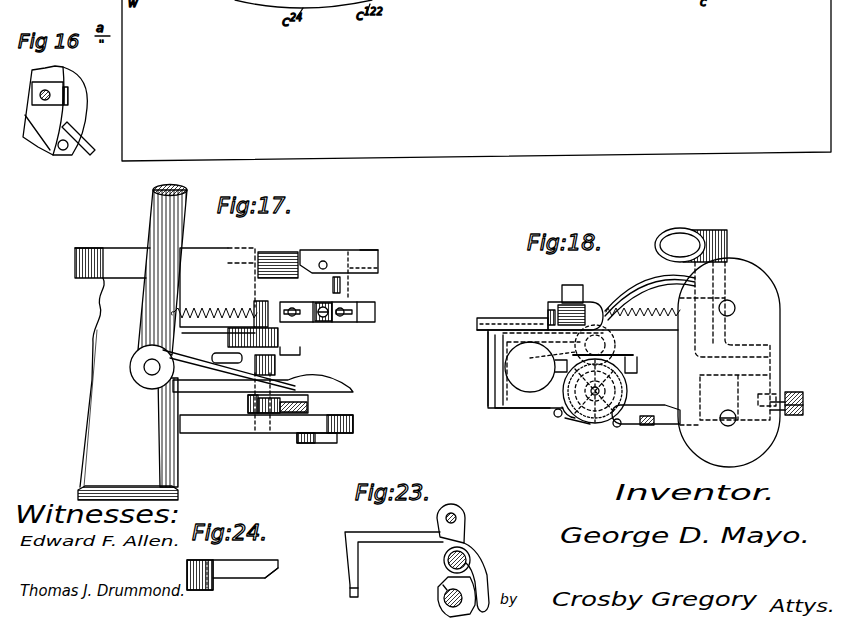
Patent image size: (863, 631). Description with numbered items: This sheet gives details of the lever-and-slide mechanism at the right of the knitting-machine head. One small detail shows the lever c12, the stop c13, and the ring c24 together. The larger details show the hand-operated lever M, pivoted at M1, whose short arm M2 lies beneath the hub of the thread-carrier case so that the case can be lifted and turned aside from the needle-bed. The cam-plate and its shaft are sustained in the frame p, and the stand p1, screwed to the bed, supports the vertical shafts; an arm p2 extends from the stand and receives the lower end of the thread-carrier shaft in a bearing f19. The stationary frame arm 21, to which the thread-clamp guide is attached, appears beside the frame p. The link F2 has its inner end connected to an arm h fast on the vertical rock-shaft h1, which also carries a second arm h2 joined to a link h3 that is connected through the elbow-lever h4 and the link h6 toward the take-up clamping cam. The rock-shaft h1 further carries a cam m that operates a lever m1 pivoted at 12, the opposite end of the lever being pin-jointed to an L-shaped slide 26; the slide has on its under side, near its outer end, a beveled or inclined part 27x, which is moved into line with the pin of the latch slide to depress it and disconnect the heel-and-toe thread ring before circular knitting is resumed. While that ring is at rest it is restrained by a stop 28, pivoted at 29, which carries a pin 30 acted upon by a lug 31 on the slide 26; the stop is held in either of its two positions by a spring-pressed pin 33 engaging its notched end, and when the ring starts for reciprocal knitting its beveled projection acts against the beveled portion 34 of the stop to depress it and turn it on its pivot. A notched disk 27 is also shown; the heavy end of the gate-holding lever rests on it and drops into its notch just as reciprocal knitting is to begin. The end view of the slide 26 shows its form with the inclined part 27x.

In FIG. 16A, the stop c13 is at (68, 97).
In FIG. 16A, the lever c12 is at (83, 155).
In FIG. 16A, the ring c24 is at (42, 137).
In FIG. 17, the hand-operated lever M is at (153, 208).
In FIG. 18, the hand-operated lever M is at (686, 232).
In FIG. 17, the pivot M1 is at (130, 365).
In FIG. 17, the short arm M2 is at (274, 371).
In FIG. 17, the frame p is at (165, 367).
In FIG. 18, the frame p is at (523, 400).
In FIG. 17, the stand p1 is at (92, 433).
In FIG. 18, the stand p1 is at (780, 304).
In FIG. 17, the arm p2 is at (228, 433).
In FIG. 17, the disk 27 is at (228, 258).
In FIG. 18, the disk 27 is at (575, 422).
In FIG. 17, the spring-pressed pin 33 is at (297, 252).
In FIG. 18, the spring-pressed pin 33 is at (557, 304).
In FIG. 17, the stop 28 is at (380, 264).
In FIG. 18, the stop 28 is at (495, 318).
In FIG. 17, the pivot 29 is at (325, 260).
In FIG. 17, the beveled portion 34 is at (374, 250).
In FIG. 18, the beveled portion 34 is at (486, 327).
In FIG. 17, the pin 30 is at (342, 284).
In FIG. 17, the L-shaped slide 26 is at (376, 310).
In FIG. 18, the L-shaped slide 26 is at (487, 357).
In FIG. 23, the L-shaped slide 26 is at (350, 568).
In FIG. 24, the L-shaped slide 26 is at (245, 575).
In FIG. 17, the lug 31 is at (322, 304).
In FIG. 17, the lever m1 is at (250, 338).
In FIG. 18, the lever m1 is at (650, 352).
In FIG. 23, the lever m1 is at (481, 578).
In FIG. 17, the vertical rock-shaft h1 is at (305, 350).
In FIG. 23, the vertical rock-shaft h1 is at (443, 603).
In FIG. 17, the second arm h2 is at (277, 366).
In FIG. 18, the second arm h2 is at (592, 424).
In FIG. 17, the link h3 is at (220, 353).
In FIG. 18, the link h3 is at (642, 426).
In FIG. 18, the elbow-lever h4 is at (792, 392).
In FIG. 18, the link h6 is at (790, 418).
In FIG. 17, the arm h is at (308, 402).
In FIG. 17, the link F2 is at (292, 410).
In FIG. 18, the link F2 is at (584, 285).
In FIG. 17, the bearing f19 is at (325, 441).
In FIG. 18, the pivot 12 is at (540, 367).
In FIG. 23, the pivot 12 is at (468, 557).
In FIG. 18, the stationary frame arm 21 is at (517, 380).
In FIG. 18, the cam m is at (603, 342).
In FIG. 23, the cam m is at (443, 585).
In FIG. 23, the beveled or inclined part 27x is at (350, 590).
In FIG. 24, the beveled or inclined part 27x is at (270, 576).